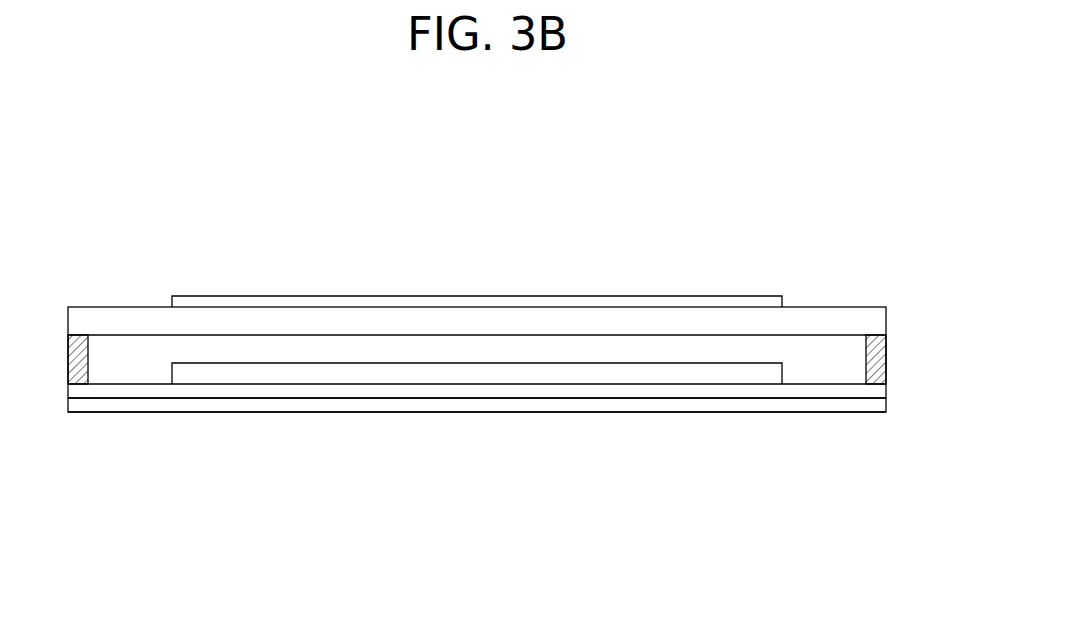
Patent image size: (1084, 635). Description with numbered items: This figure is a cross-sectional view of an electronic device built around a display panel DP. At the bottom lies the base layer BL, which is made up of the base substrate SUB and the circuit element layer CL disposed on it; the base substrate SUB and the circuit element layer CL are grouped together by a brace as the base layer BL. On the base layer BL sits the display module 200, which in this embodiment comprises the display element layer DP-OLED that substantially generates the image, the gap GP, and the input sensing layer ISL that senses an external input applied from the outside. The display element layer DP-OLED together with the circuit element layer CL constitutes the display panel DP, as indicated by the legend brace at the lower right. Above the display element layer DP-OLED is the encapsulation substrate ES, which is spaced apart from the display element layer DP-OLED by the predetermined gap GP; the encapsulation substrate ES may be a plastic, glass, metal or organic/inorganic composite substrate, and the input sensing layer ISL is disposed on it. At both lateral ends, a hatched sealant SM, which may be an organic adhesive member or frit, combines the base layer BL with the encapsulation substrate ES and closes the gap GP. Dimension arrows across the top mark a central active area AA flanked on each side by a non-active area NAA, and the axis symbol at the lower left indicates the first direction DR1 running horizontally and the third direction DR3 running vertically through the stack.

The encapsulation substrate ES is at (875, 320).
The sealant SM is at (873, 352).
The input sensing layer ISL is at (652, 302).
The display element layer DP-OLED is at (482, 375).
The gap GP is at (589, 352).
The circuit element layer CL is at (383, 392).
The base substrate SUB is at (316, 408).
The base layer BL is at (397, 485).
The display module 200 is at (673, 485).
The display panel DP is at (784, 502).
The non-active area NAA is at (68, 307).
The active area AA is at (782, 384).
The first direction DR1 is at (66, 602).
The third direction DR3 is at (66, 602).